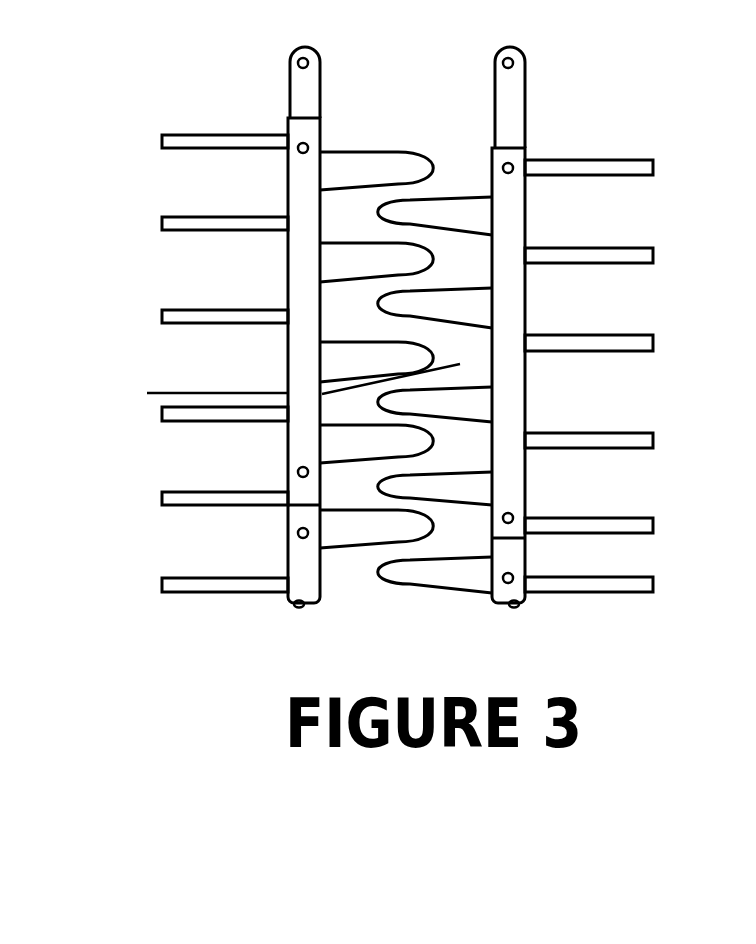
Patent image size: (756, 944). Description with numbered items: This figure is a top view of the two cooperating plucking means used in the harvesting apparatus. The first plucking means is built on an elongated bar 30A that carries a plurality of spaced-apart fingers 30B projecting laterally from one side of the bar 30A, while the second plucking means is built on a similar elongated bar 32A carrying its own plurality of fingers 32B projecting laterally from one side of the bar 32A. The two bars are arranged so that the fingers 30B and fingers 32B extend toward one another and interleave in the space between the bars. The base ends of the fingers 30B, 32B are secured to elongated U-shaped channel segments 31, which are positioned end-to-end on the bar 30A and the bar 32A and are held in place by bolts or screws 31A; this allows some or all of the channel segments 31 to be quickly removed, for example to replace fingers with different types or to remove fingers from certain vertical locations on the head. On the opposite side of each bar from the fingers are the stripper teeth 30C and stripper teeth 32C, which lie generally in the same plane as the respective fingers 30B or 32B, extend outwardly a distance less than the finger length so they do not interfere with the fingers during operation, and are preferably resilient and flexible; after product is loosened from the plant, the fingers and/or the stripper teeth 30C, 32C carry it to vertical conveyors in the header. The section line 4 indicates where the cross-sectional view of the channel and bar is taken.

The elongated bar 30A is at (297, 83).
The fingers 30B is at (343, 152).
The stripper teeth 30C is at (163, 315).
The elongated U-shaped channel 31 is at (284, 284).
The bolts or screws 31A is at (512, 163).
The elongated bar 32A is at (513, 107).
The fingers 32B is at (451, 195).
The stripper teeth 32C is at (623, 247).
The section line 4- 4 is at (147, 393).